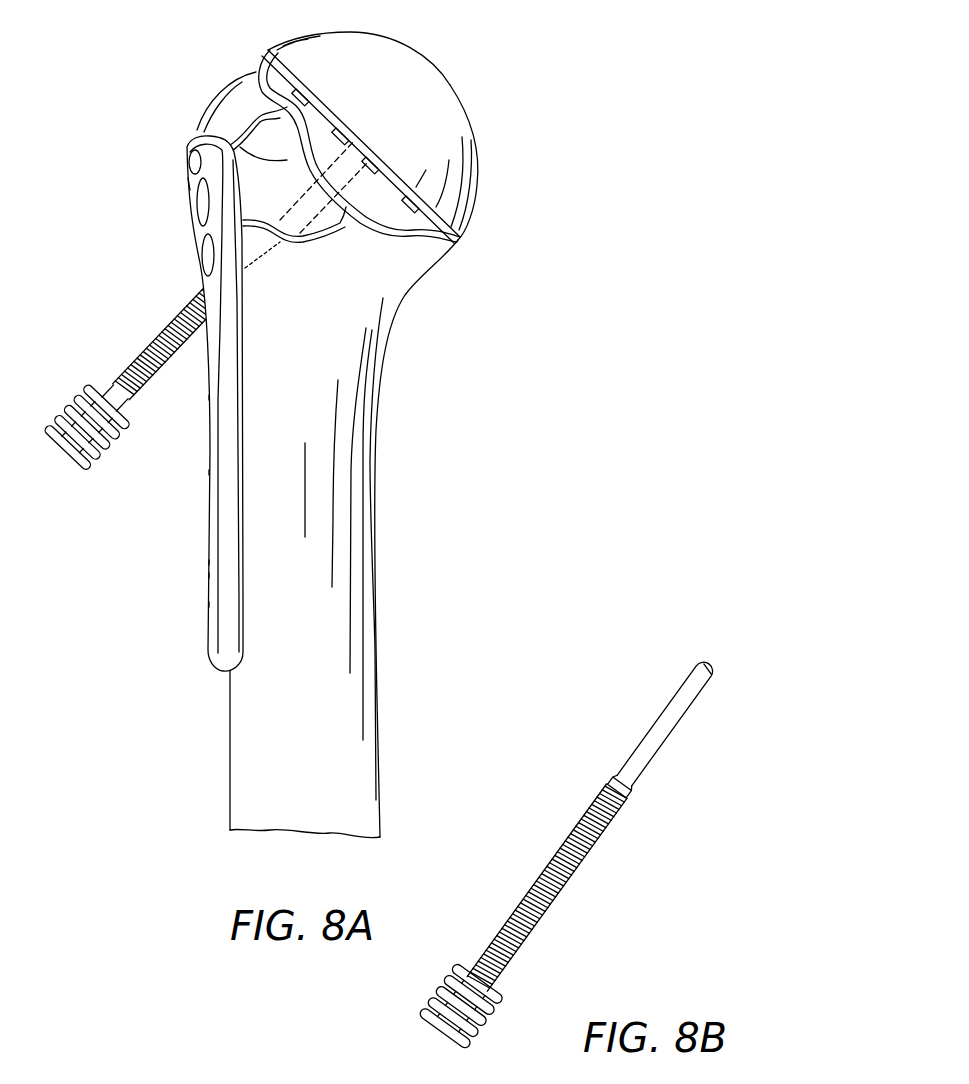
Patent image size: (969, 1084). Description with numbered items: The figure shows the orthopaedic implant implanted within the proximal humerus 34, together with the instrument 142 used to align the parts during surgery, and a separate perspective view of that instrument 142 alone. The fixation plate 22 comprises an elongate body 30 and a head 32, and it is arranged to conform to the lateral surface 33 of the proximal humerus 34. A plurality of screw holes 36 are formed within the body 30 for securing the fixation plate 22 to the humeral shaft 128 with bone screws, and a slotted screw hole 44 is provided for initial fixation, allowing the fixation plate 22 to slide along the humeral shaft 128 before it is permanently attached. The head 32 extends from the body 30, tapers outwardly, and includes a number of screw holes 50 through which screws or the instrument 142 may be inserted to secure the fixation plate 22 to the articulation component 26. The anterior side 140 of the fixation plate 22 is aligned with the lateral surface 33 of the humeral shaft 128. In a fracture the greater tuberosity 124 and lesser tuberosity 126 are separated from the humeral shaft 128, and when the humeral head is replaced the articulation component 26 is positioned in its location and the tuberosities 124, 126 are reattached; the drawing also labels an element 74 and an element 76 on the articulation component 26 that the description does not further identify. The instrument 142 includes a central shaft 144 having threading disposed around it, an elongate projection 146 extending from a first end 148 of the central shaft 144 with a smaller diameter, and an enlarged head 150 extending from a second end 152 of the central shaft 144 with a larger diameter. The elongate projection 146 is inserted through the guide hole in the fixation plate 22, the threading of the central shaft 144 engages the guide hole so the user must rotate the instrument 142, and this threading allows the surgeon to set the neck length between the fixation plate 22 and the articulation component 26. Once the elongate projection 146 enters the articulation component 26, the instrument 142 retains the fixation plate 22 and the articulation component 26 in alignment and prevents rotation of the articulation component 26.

In FIG. 8A, the fixation plate 22 is at (210, 504).
In FIG. 8A, the articulation component 26 is at (453, 122).
In FIG. 8A, the elongate body 30 is at (210, 575).
In FIG. 8A, the head 32 is at (188, 180).
In FIG. 8A, the lateral surface 33 is at (230, 712).
In FIG. 8A, the proximal humerus 34 is at (345, 349).
In FIG. 8A, the screw holes 36 is at (207, 397).
In FIG. 8A, the slotted screw hole 44 is at (208, 472).
In FIG. 8A, the screw holes 50 is at (190, 163).
In FIG. 8A, the humeral head 74 is at (383, 58).
In FIG. 8A, the head resection surface 76 is at (441, 78).
In FIG. 8A, the greater tuberosity 124 is at (236, 96).
In FIG. 8A, the lesser tuberosity 126 is at (210, 125).
In FIG. 8A, the humeral shaft 128 is at (367, 527).
In FIG. 8A, the anterior side 140 is at (190, 140).
In FIG. 8A, the instrument 142 is at (119, 371).
In FIG. 8B, the instrument 142 is at (557, 847).
In FIG. 8A, the central shaft 144 is at (190, 314).
In FIG. 8B, the central shaft 144 is at (572, 832).
In FIG. 8A, the elongate projection 146 is at (345, 173).
In FIG. 8B, the elongate projection 146 is at (672, 700).
In FIG. 8A, the first end 148 is at (255, 241).
In FIG. 8B, the first end 148 is at (637, 792).
In FIG. 8A, the enlarged head 150 is at (47, 423).
In FIG. 8B, the enlarged head 150 is at (440, 1028).
In FIG. 8A, the second end 152 is at (143, 351).
In FIG. 8B, the second end 152 is at (468, 975).